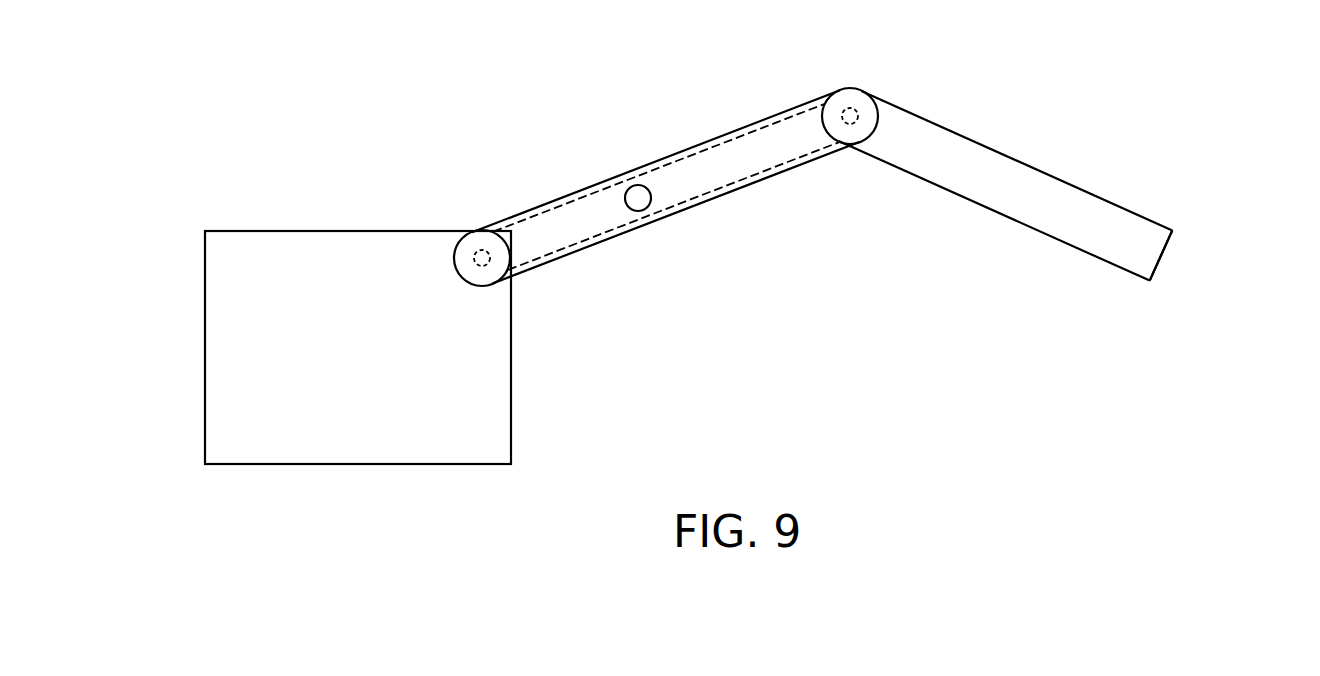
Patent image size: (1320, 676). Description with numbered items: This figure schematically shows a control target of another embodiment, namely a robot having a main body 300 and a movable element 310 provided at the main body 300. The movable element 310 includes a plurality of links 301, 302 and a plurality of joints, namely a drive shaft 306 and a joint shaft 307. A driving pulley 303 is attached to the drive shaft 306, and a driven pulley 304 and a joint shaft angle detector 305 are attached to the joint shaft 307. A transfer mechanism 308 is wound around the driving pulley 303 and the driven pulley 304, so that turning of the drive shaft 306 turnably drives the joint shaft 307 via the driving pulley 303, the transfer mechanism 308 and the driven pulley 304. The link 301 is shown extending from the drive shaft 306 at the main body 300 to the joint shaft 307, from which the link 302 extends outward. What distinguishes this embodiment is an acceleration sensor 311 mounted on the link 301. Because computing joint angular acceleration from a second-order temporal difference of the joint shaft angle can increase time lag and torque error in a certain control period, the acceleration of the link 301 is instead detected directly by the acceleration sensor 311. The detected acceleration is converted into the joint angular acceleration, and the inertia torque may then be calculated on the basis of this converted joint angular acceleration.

The main body 300 is at (343, 231).
The link 301 is at (722, 135).
The link 302 is at (1033, 167).
The driving pulley 303 is at (490, 284).
The driven pulley 304 is at (850, 144).
The joint shaft angle detector 305 is at (1165, 255).
The drive shaft 306 is at (481, 250).
The joint shaft 307 is at (850, 108).
The transfer mechanism 308 is at (723, 187).
The movable element 310 is at (792, 301).
The acceleration sensor 311 is at (640, 196).